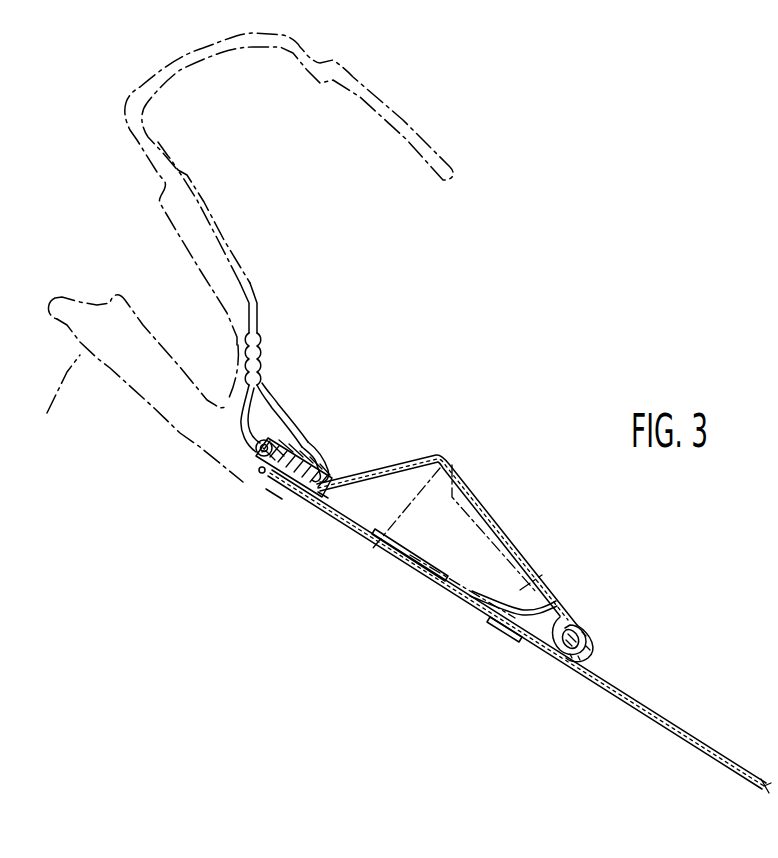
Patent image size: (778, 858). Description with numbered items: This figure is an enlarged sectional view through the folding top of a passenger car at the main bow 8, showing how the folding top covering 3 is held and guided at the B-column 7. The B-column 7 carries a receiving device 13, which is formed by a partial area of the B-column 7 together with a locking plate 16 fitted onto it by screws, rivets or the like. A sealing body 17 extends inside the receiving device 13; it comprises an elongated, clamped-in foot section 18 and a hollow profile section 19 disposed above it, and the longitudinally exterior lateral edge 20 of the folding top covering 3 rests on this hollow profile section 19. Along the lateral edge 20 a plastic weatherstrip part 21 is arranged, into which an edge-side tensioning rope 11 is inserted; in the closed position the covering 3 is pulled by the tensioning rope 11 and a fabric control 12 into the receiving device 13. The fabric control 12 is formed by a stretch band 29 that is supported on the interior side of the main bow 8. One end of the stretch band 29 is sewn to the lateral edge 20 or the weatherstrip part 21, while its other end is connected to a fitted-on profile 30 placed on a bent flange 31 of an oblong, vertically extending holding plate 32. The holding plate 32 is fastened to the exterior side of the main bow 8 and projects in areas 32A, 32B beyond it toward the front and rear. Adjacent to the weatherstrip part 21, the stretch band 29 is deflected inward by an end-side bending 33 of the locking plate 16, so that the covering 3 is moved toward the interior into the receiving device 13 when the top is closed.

The folding top covering 3 is at (672, 730).
The B-column 7 is at (242, 257).
The main bow 8 is at (463, 553).
The tensioning rope 11 is at (256, 454).
The fabric control 12 is at (288, 500).
The receiving device 13 is at (318, 458).
The locking plate 16 is at (280, 417).
The sealing body 17 is at (236, 434).
The foot section 18 is at (266, 335).
The hollow profile section 19 is at (268, 390).
The lateral edge 20 is at (274, 490).
The weatherstrip part 21 is at (260, 474).
The stretch band 29 is at (453, 462).
The fitted-on profile 30 is at (572, 612).
The bent flange 31 is at (563, 652).
The holding plate 32 is at (496, 620).
The projecting area 32A is at (377, 548).
The projecting area 32B is at (520, 633).
The end-side bending 33 is at (322, 495).